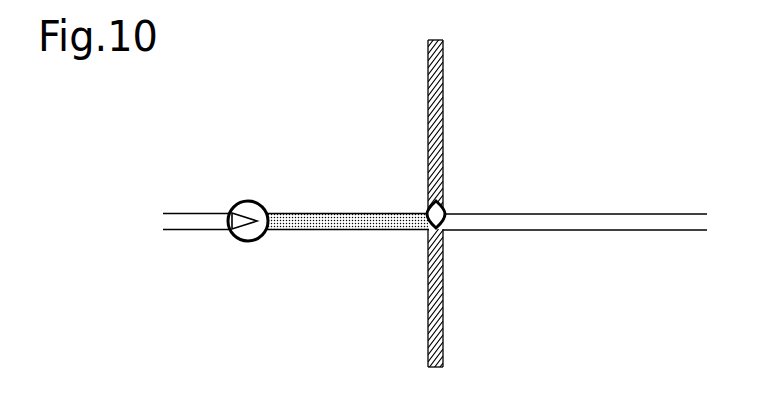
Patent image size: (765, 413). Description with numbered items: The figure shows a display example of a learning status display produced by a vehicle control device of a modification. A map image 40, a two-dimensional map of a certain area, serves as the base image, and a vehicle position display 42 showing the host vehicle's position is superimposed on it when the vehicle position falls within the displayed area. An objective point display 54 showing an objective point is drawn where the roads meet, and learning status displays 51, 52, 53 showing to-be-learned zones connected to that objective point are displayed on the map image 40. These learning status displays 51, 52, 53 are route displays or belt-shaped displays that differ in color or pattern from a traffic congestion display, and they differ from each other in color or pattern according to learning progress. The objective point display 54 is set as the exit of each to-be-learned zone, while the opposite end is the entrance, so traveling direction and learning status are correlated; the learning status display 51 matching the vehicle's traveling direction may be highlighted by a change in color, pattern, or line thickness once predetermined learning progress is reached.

The map image 40 is at (613, 84).
The vehicle position display 42 is at (248, 201).
The learning status display 51 is at (346, 212).
The learning status display 52 is at (444, 297).
The learning status display 53 is at (444, 118).
The objective point display 54 is at (446, 207).